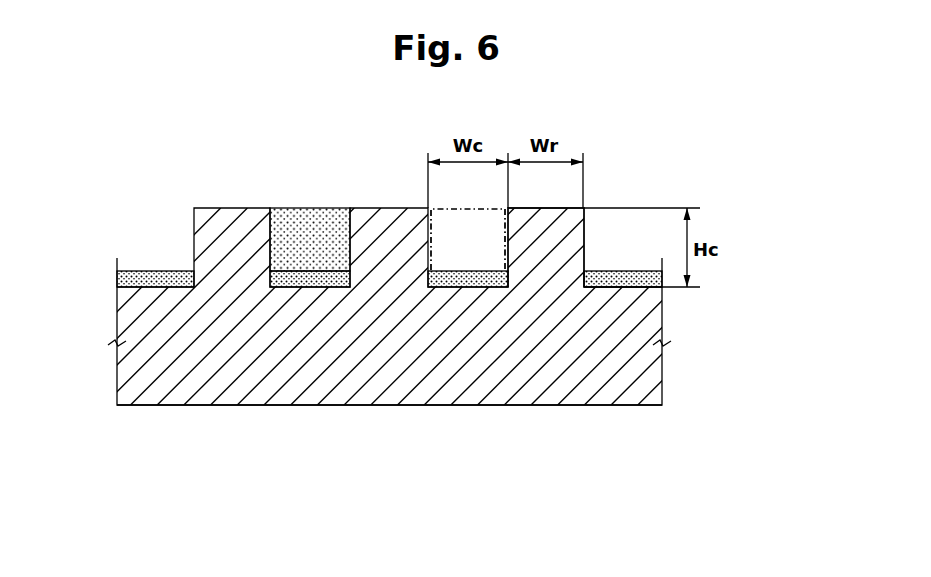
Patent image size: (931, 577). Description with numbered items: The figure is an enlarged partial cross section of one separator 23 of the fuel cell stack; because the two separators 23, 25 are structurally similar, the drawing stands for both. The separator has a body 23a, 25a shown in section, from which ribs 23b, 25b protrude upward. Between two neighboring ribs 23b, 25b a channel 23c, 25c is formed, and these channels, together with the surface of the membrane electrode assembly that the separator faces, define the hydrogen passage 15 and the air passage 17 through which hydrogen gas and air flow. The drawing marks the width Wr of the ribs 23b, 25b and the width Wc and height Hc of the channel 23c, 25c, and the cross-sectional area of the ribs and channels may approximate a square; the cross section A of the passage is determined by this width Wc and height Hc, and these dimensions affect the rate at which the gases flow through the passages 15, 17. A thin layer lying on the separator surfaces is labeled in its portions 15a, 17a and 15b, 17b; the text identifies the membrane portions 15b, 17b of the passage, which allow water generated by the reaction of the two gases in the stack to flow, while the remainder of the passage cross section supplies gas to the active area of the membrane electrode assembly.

The separator 23 is at (439, 328).
The separator 25 is at (668, 404).
The body 23a is at (431, 329).
The body 25a is at (262, 362).
The rib 23b is at (623, 226).
The rib 25b is at (565, 228).
The channel 23c is at (405, 205).
The channel 25c is at (443, 213).
The hydrogen passage 15 is at (389, 353).
The air passage 17 is at (389, 353).
The thin layer bottom portion in trench 15a is at (434, 360).
The thin layer bottom portion (alternative) 17a is at (452, 288).
The membrane portion 15b is at (508, 328).
The membrane portion 17b is at (482, 248).
The cross section A is at (287, 207).